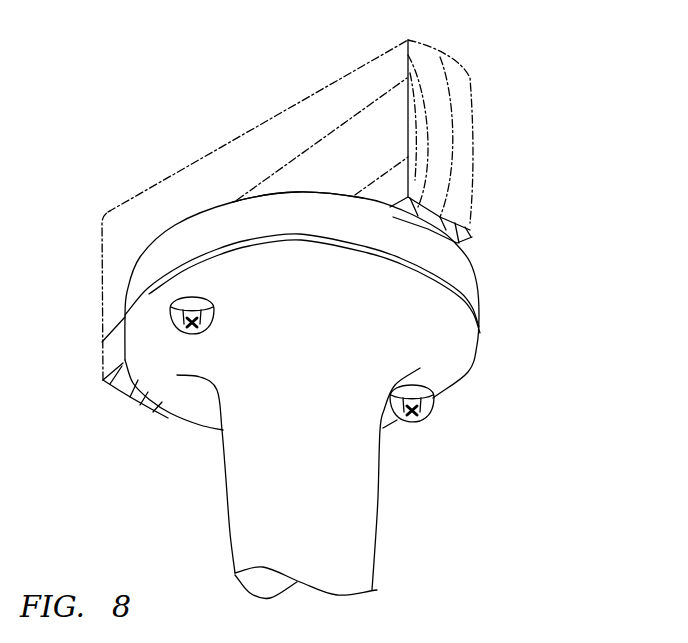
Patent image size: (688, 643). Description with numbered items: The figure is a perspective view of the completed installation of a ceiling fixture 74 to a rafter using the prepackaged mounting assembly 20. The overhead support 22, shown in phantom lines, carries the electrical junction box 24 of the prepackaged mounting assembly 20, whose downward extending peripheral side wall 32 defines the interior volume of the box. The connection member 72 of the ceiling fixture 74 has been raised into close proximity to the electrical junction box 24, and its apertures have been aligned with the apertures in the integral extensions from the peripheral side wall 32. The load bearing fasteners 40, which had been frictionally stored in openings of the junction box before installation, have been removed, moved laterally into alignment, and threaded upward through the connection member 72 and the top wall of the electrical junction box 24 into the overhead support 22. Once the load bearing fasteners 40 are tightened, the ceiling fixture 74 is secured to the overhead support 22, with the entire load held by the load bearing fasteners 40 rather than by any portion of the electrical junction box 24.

The prepackaged mounting assembly 20 is at (527, 323).
The overhead support 22 is at (235, 153).
The electrical junction box 24 is at (473, 261).
The peripheral side wall 32 is at (315, 224).
The load bearing fastener 40 is at (178, 301).
The connection member 72 is at (462, 362).
The ceiling fixture 74 is at (345, 511).